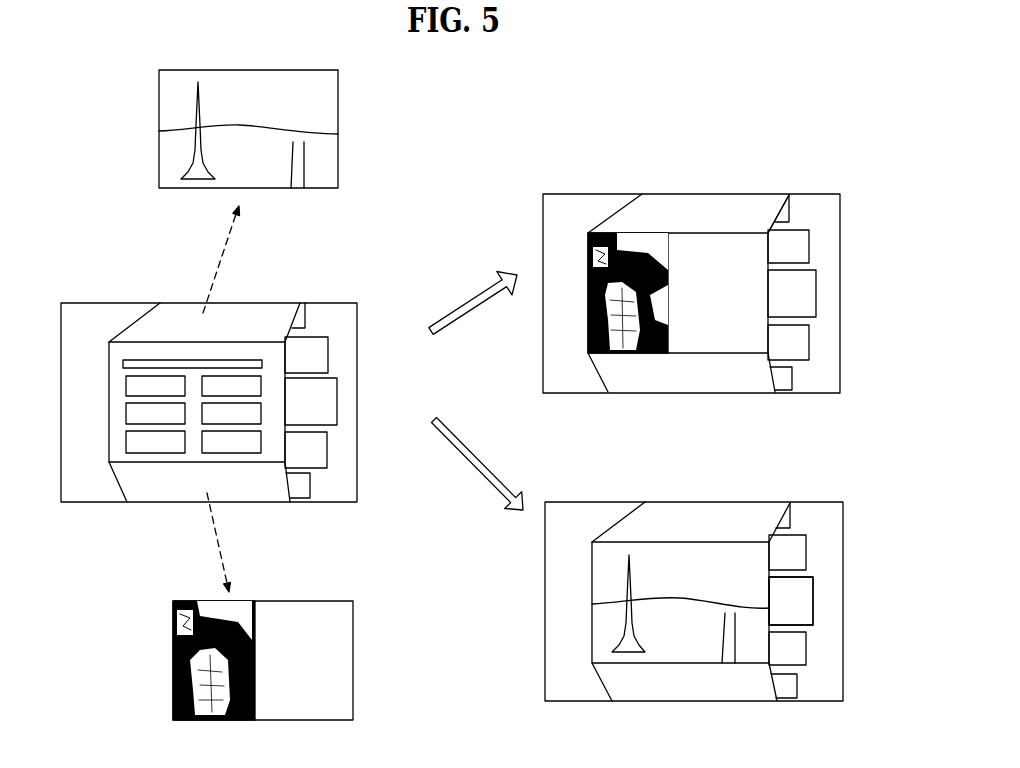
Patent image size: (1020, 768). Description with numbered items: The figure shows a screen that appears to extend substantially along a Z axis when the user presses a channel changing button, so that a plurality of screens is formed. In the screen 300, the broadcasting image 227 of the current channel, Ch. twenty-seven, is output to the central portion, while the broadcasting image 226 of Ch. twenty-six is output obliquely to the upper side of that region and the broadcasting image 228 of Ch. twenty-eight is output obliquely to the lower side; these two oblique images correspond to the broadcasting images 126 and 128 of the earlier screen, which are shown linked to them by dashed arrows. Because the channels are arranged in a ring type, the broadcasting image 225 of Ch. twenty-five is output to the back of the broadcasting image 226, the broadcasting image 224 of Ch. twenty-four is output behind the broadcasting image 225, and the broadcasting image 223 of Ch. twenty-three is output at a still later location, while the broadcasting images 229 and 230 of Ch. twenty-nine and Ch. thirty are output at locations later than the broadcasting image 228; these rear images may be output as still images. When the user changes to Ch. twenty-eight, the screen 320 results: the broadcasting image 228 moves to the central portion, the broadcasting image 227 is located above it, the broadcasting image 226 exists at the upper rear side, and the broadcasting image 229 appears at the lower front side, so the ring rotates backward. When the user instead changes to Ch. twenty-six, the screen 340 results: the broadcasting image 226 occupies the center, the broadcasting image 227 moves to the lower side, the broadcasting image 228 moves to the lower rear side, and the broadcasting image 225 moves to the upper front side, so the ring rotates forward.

The broadcasting image 126 is at (356, 104).
The broadcasting image 128 is at (358, 653).
The screen 300 is at (121, 273).
The screen 320 is at (635, 174).
The screen 340 is at (605, 485).
The broadcasting image of Ch. 23 223 is at (337, 400).
The broadcasting image of Ch. 24 224 is at (328, 350).
The broadcasting image of Ch. 25 225 is at (307, 316).
The broadcasting image of Ch. 26 226 is at (275, 312).
The broadcasting image of Ch. 27 227 is at (112, 450).
The broadcasting image of Ch. 28 228 is at (263, 487).
The broadcasting image of Ch. 29 229 is at (310, 483).
The broadcasting image of Ch. 30 230 is at (327, 447).